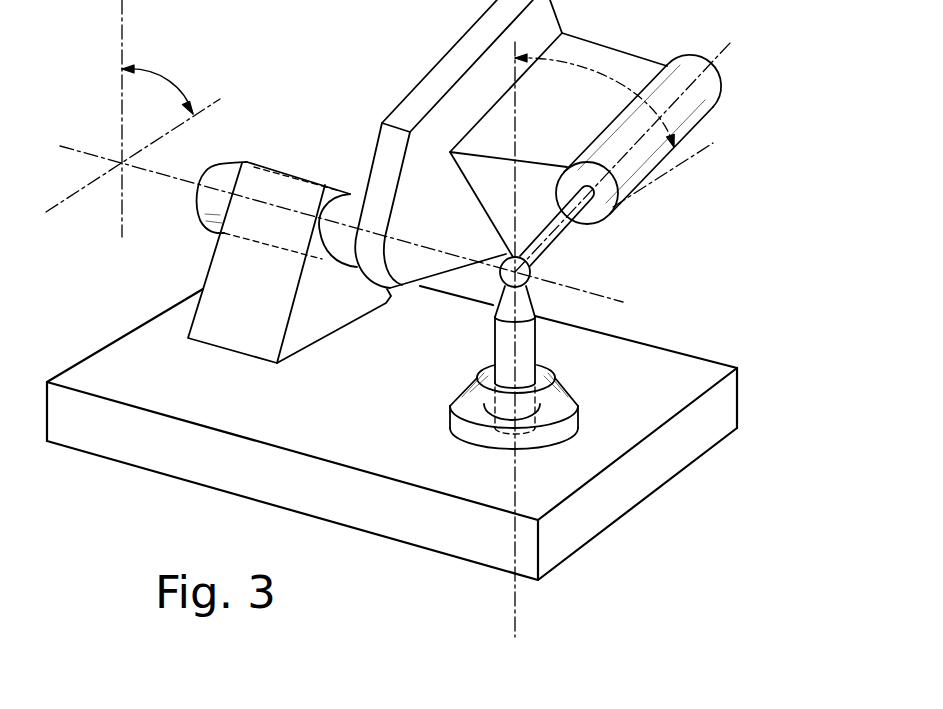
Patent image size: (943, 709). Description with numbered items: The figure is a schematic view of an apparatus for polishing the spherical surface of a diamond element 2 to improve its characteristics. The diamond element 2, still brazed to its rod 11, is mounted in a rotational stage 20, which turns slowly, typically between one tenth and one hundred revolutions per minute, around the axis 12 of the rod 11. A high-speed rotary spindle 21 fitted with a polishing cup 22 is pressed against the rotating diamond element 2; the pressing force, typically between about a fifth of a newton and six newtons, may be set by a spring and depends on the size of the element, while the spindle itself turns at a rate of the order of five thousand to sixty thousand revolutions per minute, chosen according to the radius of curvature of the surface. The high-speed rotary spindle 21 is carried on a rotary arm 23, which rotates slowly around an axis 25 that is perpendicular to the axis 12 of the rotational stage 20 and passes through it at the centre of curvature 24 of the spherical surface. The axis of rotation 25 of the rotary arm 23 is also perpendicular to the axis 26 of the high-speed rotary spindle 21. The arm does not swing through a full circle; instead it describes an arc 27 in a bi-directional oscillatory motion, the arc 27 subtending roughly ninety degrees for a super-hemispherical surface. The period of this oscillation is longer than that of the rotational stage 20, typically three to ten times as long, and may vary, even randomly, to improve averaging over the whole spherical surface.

The diamond element 2 is at (530, 291).
The rod 11 is at (522, 333).
The axis of the rod 12 is at (515, 605).
The rotational stage 20 is at (567, 428).
The high-speed rotary spindle 21 is at (703, 88).
The polishing cup 22 is at (562, 238).
The rotary arm 23 is at (457, 60).
The centre of curvature 24 is at (498, 278).
The axis of rotation of the rotary arm 25 is at (87, 153).
The axis of the high-speed rotary spindle 26 is at (728, 43).
The arc 27 is at (667, 120).